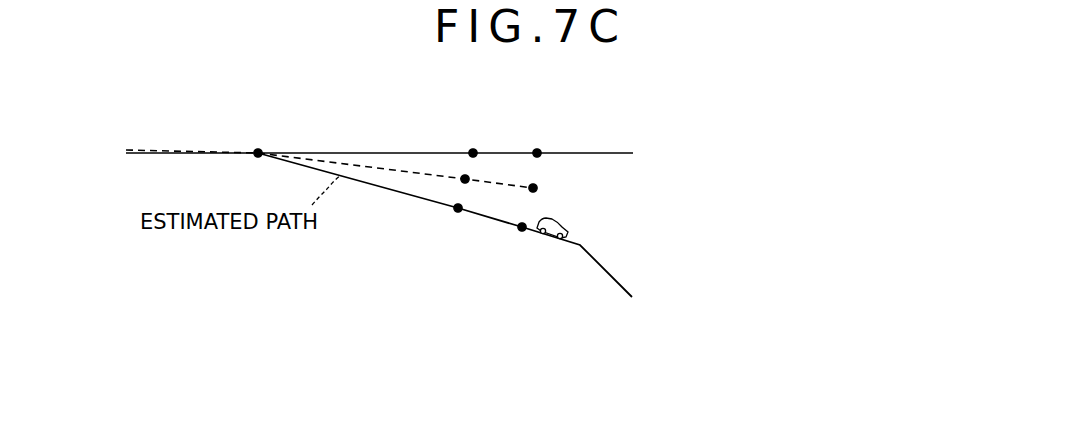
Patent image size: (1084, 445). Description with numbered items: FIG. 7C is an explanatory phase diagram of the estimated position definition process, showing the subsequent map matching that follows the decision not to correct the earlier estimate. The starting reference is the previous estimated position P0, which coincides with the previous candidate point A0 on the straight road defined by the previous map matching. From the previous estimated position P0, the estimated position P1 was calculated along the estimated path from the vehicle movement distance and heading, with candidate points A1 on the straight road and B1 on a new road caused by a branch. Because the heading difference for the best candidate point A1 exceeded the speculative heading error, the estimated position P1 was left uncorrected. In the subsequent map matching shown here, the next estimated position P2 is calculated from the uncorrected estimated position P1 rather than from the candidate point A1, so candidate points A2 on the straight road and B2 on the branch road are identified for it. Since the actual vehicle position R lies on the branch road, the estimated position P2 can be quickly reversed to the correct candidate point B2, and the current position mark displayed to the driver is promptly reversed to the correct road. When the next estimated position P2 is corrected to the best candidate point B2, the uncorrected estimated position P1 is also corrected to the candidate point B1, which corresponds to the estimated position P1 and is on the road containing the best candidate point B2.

The previous estimated position P0 is at (288, 122).
The previous candidate point A0 is at (258, 148).
The candidate point A1 is at (474, 148).
The candidate point A2 is at (538, 148).
The estimated position P1 is at (469, 178).
The next estimated position P2 is at (537, 187).
The candidate point B1 is at (458, 213).
The best candidate point B2 is at (522, 232).
The actual vehicle position R is at (567, 227).